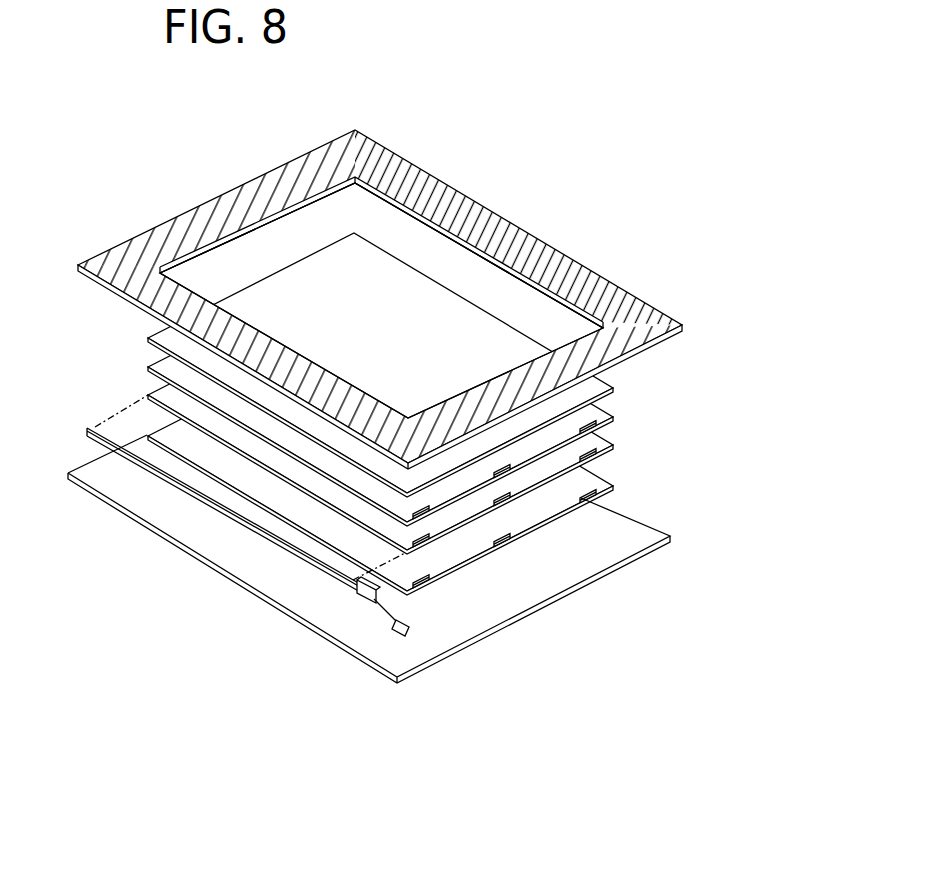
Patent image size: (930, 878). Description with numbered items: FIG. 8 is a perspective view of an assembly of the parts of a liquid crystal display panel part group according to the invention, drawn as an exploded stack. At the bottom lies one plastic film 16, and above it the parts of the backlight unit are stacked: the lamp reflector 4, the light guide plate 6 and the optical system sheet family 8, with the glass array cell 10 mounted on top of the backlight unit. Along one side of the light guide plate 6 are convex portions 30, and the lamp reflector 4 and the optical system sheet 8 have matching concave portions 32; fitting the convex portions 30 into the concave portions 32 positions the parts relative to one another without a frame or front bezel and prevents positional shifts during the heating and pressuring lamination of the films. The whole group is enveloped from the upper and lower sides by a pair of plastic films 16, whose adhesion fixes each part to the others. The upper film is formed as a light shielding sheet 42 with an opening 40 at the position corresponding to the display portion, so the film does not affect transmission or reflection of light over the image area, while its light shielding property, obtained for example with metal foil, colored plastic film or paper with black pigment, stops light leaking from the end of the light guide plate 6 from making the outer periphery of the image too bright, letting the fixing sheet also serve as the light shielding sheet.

The lamp reflector 4 is at (593, 482).
The light guide plate 6 is at (610, 437).
The optical system sheet family 8 is at (590, 415).
The array cell 10 is at (587, 385).
The plastic film 16 is at (577, 278).
The convex portions 30 is at (597, 461).
The concave portions 32 is at (592, 503).
The opening 40 is at (463, 263).
The light shielding sheet 42 is at (428, 192).